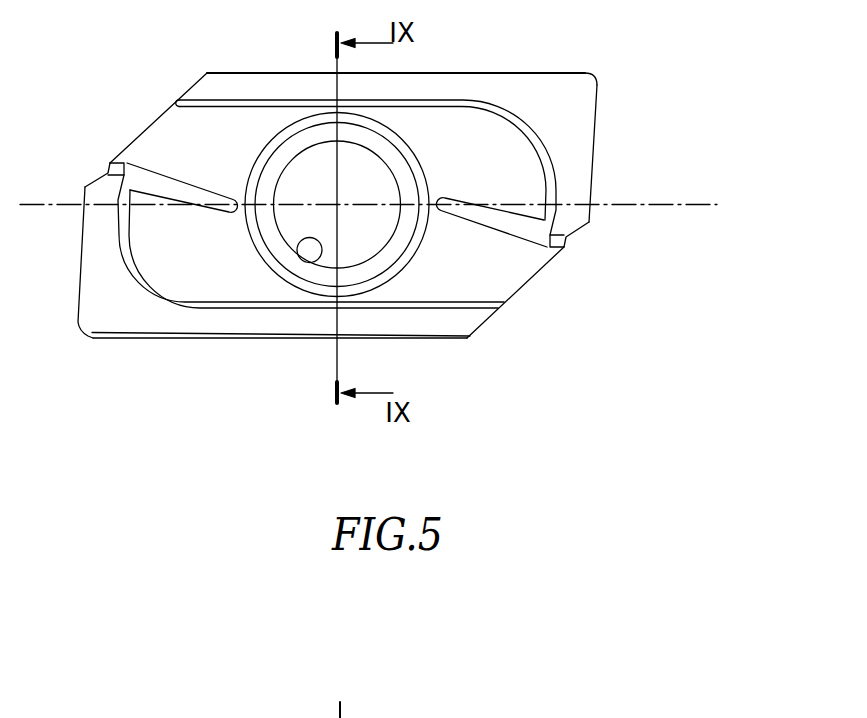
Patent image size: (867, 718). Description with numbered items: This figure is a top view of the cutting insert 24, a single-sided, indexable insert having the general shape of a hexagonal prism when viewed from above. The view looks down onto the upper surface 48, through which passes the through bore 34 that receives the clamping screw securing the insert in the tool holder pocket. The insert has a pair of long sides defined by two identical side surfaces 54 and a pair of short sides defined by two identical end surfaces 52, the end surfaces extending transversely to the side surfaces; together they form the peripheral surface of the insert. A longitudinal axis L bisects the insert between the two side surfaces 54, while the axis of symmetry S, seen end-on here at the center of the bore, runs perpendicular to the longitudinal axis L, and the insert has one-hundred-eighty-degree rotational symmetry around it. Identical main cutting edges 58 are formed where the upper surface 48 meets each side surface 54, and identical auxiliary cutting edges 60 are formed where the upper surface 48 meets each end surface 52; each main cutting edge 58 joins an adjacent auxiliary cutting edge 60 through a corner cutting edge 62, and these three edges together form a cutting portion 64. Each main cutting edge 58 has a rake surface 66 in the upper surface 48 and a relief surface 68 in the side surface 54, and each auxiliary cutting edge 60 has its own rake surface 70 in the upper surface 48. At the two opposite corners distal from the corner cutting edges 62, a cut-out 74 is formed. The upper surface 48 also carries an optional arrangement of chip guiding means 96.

The cutting insert 24 is at (466, 361).
The through bore 34 is at (318, 256).
The upper surface 48 is at (228, 113).
The end surface 52 is at (610, 220).
The side surface 54 is at (185, 353).
The main cutting edge 58 is at (532, 71).
The auxiliary cutting edge 60 is at (595, 118).
The corner cutting edge 62 is at (598, 78).
The cutting portion 64 is at (556, 80).
The rake surface 66 is at (470, 88).
The relief surface 68 is at (105, 340).
The rake surface 70 is at (567, 130).
The cut-out 74 is at (520, 295).
The chip guiding means 96 is at (528, 230).
The longitudinal axis L is at (690, 203).
The axis of symmetry S is at (337, 205).